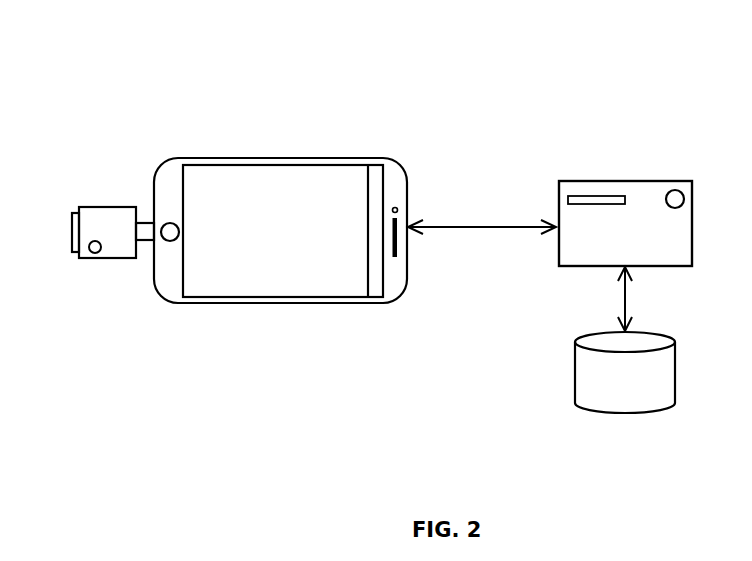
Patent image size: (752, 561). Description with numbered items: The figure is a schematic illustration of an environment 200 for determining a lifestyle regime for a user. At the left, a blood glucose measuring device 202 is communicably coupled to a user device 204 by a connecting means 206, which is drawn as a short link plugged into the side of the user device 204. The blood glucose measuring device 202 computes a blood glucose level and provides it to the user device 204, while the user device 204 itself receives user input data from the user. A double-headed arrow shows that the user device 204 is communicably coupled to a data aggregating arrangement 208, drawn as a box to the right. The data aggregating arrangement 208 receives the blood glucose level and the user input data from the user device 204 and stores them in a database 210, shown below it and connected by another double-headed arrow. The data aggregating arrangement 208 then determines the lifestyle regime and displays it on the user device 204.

The environment 200 is at (654, 62).
The blood glucose measuring device 202 is at (74, 203).
The user device 204 is at (303, 200).
The connecting means 206 is at (120, 194).
The data aggregating arrangement 208 is at (644, 195).
The database 210 is at (650, 388).